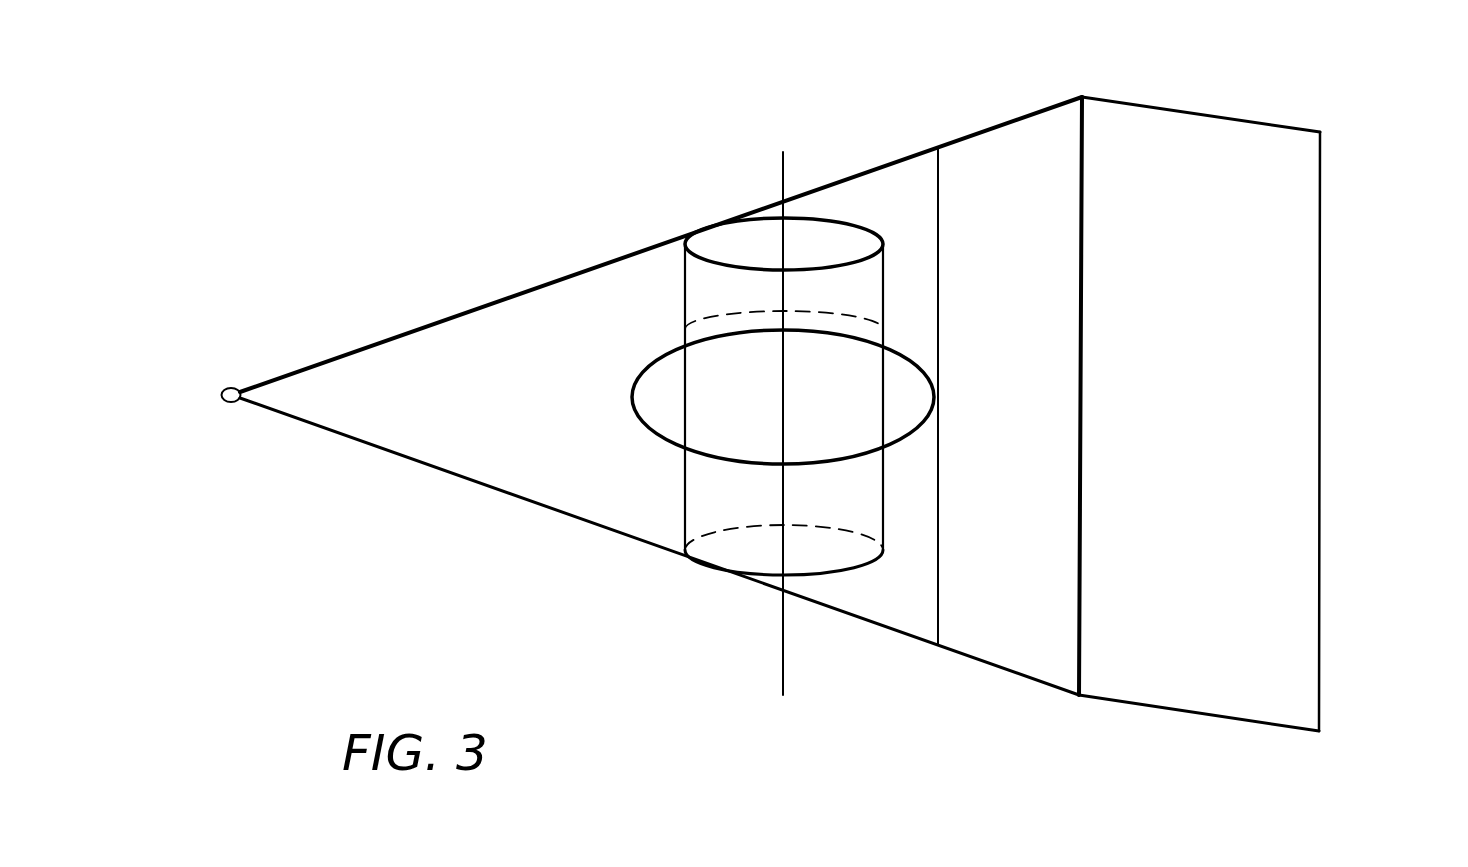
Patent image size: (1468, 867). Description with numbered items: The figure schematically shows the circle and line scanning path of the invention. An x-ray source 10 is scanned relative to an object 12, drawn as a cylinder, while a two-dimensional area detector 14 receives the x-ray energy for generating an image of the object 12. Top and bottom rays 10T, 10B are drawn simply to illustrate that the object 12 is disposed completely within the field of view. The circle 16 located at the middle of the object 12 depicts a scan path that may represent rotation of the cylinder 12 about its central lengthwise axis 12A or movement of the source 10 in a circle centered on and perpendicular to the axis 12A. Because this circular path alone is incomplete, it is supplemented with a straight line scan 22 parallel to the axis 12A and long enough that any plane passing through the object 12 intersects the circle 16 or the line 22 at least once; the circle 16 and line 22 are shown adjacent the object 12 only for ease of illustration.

The x-ray source 10 is at (195, 355).
The top ray 10T is at (443, 312).
The bottom ray 10B is at (440, 473).
The object 12 is at (820, 218).
The central lengthwise axis 12A is at (784, 175).
The two-dimensional area detector 14 is at (1222, 115).
The circle scan path 16 is at (676, 443).
The straight line scan 22 is at (938, 185).